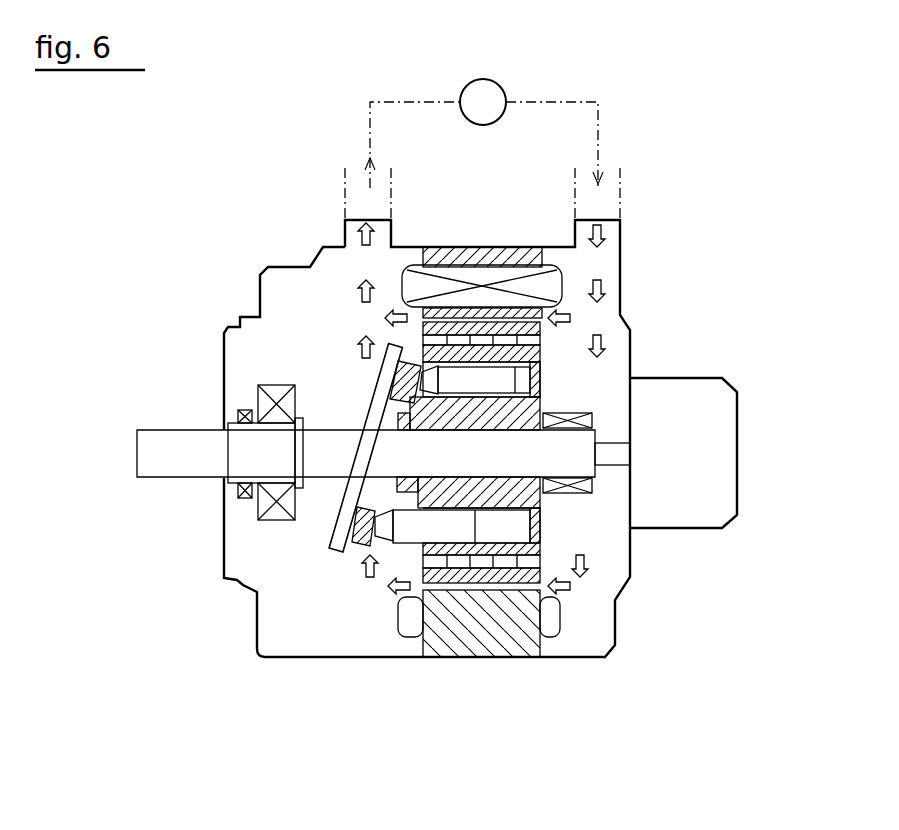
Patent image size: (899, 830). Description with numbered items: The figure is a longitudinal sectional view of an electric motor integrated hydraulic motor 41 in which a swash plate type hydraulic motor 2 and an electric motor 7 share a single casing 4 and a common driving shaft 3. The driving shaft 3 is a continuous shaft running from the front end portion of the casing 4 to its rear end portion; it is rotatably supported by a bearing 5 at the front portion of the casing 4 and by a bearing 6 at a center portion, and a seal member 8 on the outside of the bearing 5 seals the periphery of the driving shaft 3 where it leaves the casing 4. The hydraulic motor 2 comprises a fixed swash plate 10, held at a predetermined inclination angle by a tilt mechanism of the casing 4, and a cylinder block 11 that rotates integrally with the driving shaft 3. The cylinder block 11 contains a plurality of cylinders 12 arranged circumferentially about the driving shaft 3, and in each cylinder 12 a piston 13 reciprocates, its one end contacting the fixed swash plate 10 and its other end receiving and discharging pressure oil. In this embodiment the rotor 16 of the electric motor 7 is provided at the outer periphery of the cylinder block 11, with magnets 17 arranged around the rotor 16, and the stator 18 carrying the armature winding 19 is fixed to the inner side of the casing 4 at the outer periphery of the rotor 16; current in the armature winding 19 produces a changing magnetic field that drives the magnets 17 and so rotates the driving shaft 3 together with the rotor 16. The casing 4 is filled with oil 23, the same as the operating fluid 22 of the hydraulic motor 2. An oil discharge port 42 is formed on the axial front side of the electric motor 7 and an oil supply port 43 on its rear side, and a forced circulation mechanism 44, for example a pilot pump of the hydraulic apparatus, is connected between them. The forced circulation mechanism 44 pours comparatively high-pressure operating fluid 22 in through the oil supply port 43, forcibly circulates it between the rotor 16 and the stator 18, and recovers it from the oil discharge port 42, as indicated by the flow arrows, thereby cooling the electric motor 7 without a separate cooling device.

The swash plate type hydraulic motor 2 is at (353, 562).
The driving shaft 3 is at (162, 468).
The casing 4 is at (258, 296).
The bearing 5 is at (237, 585).
The bearing 6 is at (563, 413).
The electric motor 7 is at (572, 268).
The seal member 8 is at (232, 495).
The fixed swash plate 10 is at (378, 405).
The cylinder block 11 is at (543, 500).
The cylinder 12 is at (543, 520).
The piston 13 is at (410, 530).
The rotor 16 is at (543, 333).
The magnet 17 is at (540, 348).
The stator 18 is at (463, 248).
The armature winding 19 is at (557, 297).
The operating fluid 22 is at (622, 225).
The oil 23 is at (278, 582).
The electric motor integrated hydraulic motor 41 is at (768, 152).
The oil discharge port 42 is at (354, 205).
The oil supply port 43 is at (612, 215).
The forced circulation mechanism 44 is at (345, 88).